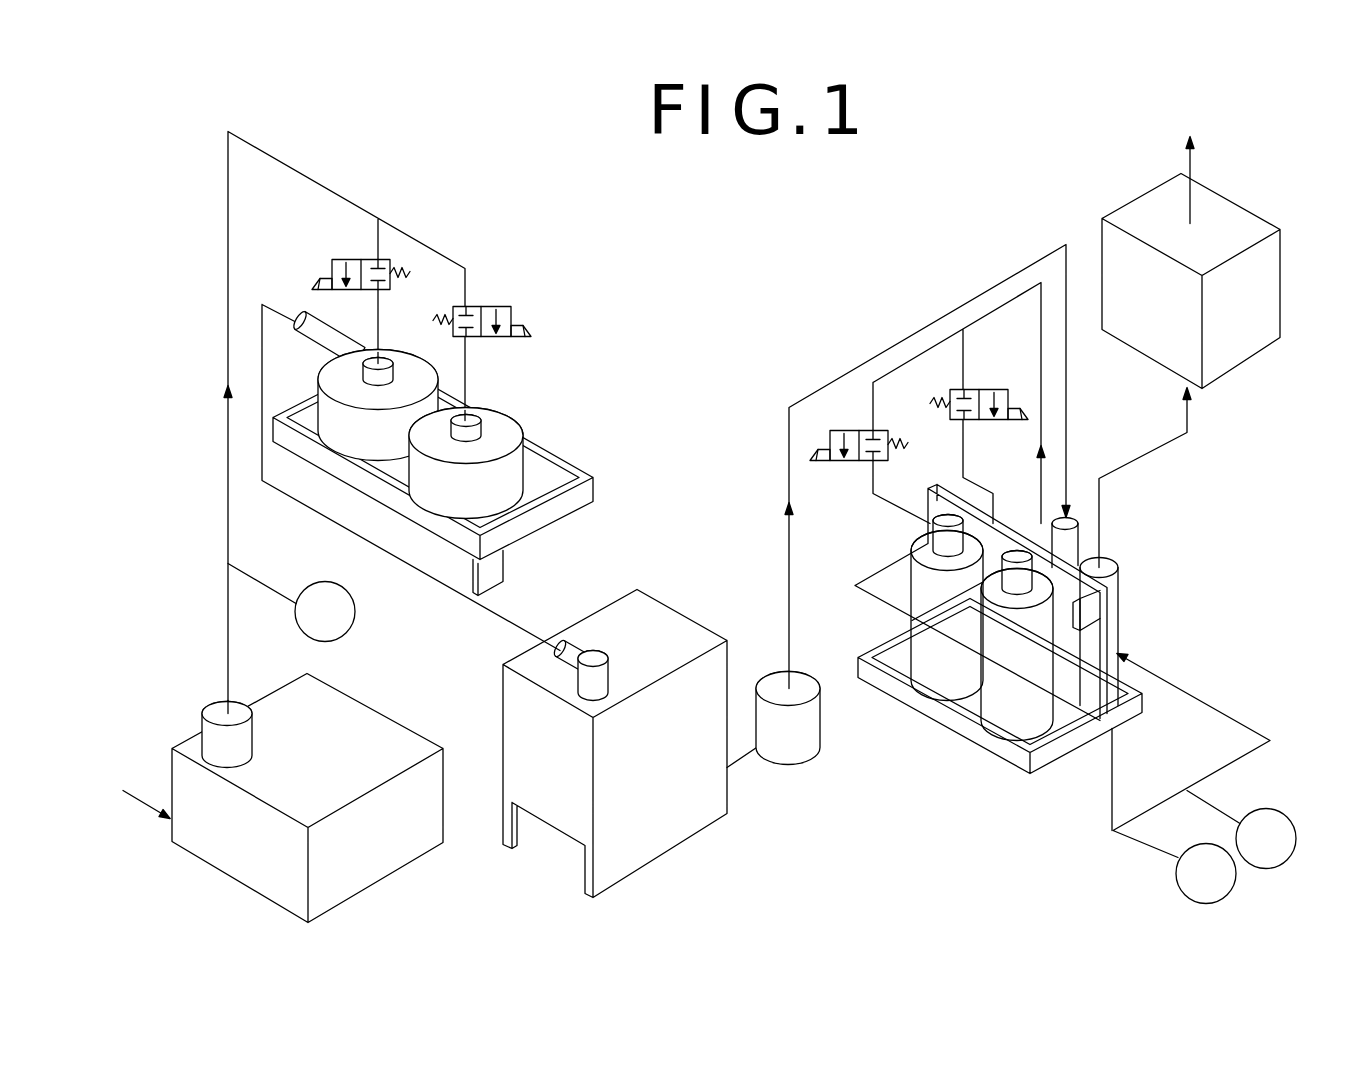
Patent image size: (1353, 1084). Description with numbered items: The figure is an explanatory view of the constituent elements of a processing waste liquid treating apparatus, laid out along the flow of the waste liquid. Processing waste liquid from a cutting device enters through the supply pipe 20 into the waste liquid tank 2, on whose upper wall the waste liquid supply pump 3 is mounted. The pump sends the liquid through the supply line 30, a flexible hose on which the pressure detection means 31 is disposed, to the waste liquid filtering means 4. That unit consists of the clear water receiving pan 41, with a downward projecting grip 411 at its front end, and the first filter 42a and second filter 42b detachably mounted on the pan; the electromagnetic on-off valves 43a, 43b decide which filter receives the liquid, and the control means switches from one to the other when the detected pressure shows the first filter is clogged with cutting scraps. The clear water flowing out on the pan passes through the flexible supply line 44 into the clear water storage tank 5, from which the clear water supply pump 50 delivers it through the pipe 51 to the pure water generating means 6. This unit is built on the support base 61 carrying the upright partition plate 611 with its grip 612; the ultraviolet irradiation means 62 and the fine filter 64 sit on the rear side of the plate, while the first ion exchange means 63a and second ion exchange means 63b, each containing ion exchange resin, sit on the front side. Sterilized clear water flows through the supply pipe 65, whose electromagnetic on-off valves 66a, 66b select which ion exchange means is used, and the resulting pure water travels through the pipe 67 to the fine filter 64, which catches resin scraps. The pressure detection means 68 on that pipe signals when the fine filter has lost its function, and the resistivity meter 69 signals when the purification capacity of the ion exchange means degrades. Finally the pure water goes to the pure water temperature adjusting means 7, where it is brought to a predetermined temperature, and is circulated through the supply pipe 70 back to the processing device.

The waste liquid tank 2 is at (388, 716).
The waste liquid supply pump 3 is at (216, 705).
The supply pipe 20 is at (136, 796).
The supply line 30 is at (228, 458).
The pressure detection means 31 is at (291, 603).
The waste liquid filtering means 4 is at (447, 431).
The clear water receiving pan 41 is at (557, 510).
The grip 411 is at (490, 572).
The first filter 42a is at (404, 366).
The second filter 42b is at (497, 422).
The electromagnetic on-off valve 43a is at (338, 259).
The electromagnetic on-off valve 43b is at (490, 306).
The supply line 44 is at (313, 510).
The clear water storage tank 5 is at (672, 604).
The clear water supply pump 50 is at (810, 728).
The pipe 51 is at (789, 484).
The pure water generating means 6 is at (1012, 557).
The support base 61 is at (1050, 752).
The partition plate 611 is at (1093, 642).
The grip 612 is at (1103, 597).
The ultraviolet irradiation means 62 is at (1082, 526).
The first ion exchange means 63a is at (920, 542).
The second ion exchange means 63b is at (1012, 715).
The fine filter 64 is at (1120, 621).
The supply pipe 65 is at (1041, 470).
The electromagnetic on-off valve 66a is at (852, 430).
The electromagnetic on-off valve 66b is at (988, 389).
The pipe 67 is at (880, 603).
The pressure detection means 68 is at (1191, 779).
The resistivity meter 69 is at (1241, 830).
The pure water temperature adjusting means 7 is at (1179, 263).
The supply pipe 70 is at (1192, 166).